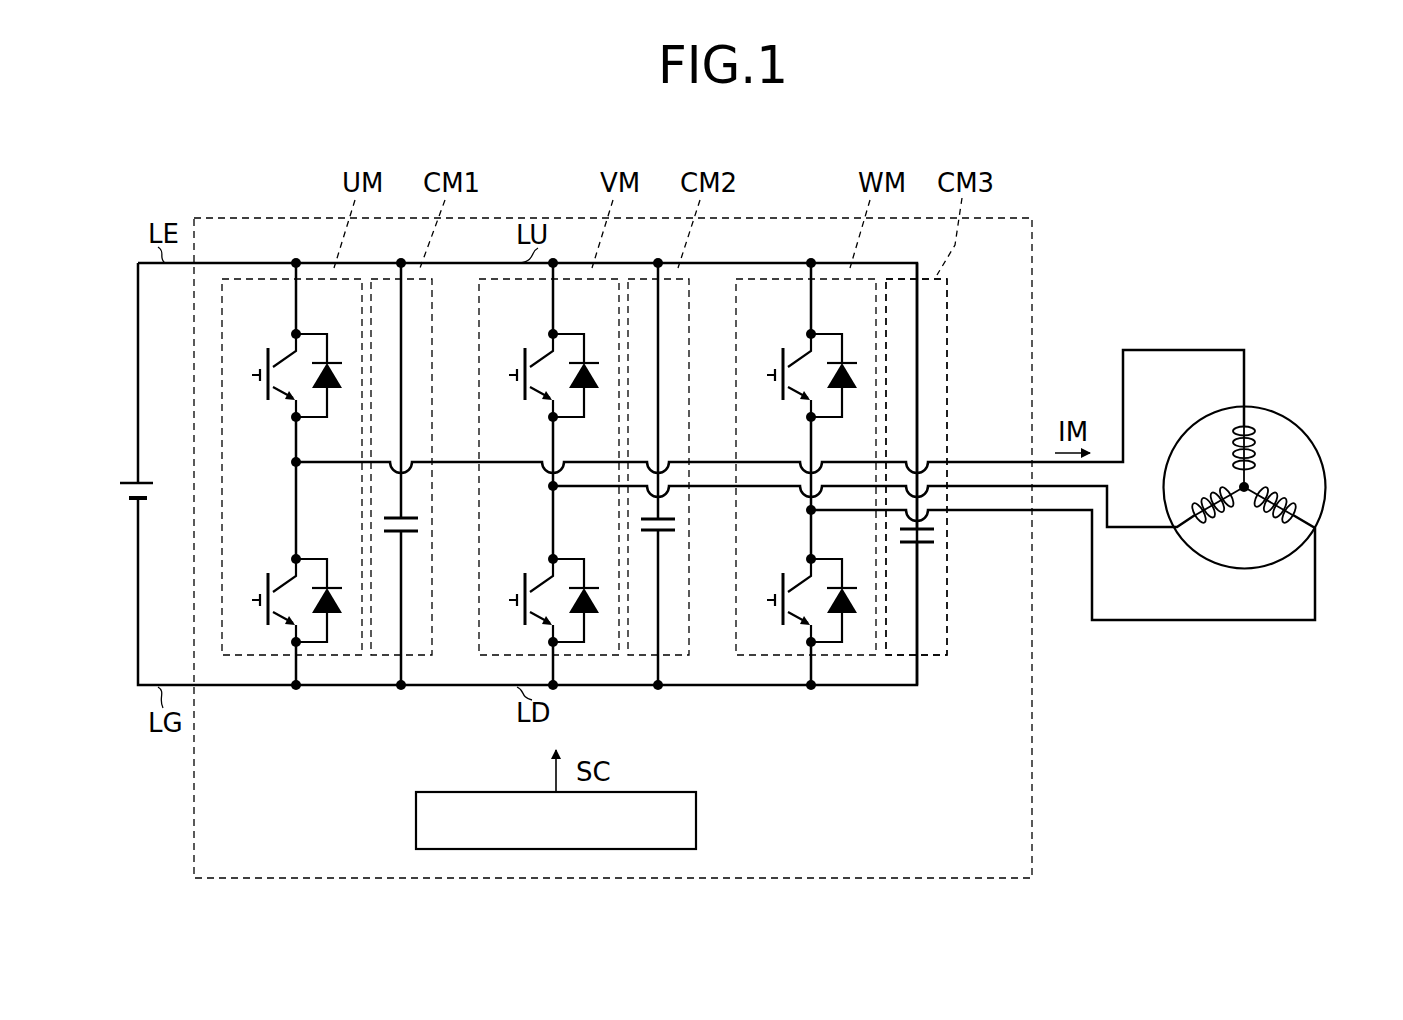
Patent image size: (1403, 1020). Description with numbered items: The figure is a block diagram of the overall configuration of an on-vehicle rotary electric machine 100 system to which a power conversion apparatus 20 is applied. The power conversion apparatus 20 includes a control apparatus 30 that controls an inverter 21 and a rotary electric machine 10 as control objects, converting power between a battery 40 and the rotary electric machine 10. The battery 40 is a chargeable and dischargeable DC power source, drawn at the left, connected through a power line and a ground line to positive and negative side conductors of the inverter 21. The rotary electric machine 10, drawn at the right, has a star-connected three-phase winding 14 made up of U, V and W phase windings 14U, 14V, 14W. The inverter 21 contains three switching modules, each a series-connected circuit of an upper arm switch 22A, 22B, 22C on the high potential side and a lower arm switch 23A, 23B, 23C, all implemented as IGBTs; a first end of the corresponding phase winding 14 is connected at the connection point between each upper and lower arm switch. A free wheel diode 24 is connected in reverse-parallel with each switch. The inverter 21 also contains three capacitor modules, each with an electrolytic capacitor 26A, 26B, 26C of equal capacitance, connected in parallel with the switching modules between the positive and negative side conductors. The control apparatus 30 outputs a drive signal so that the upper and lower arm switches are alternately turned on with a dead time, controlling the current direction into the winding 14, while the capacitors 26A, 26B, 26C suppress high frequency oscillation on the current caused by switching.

The rotary electric machine 100 is at (1112, 186).
The rotary electric machine 10 is at (1303, 426).
The three-phase winding 14 is at (1283, 474).
The U phase winding 14U is at (1234, 426).
The V phase winding 14V is at (1212, 523).
The W phase winding 14W is at (1327, 488).
The power conversion apparatus 20 is at (1032, 255).
The inverter 21 is at (948, 272).
The upper arm switch 22A is at (285, 349).
The upper arm switch 22B is at (542, 349).
The upper arm switch 22C is at (800, 349).
The lower arm switch 23A is at (285, 574).
The lower arm switch 23B is at (542, 574).
The lower arm switch 23C is at (800, 574).
The free wheel diode 24 is at (333, 357).
The capacitor 26A is at (408, 516).
The capacitor 26B is at (668, 537).
The capacitor 26C is at (925, 548).
The control apparatus 30 is at (696, 822).
The battery 40 is at (166, 470).